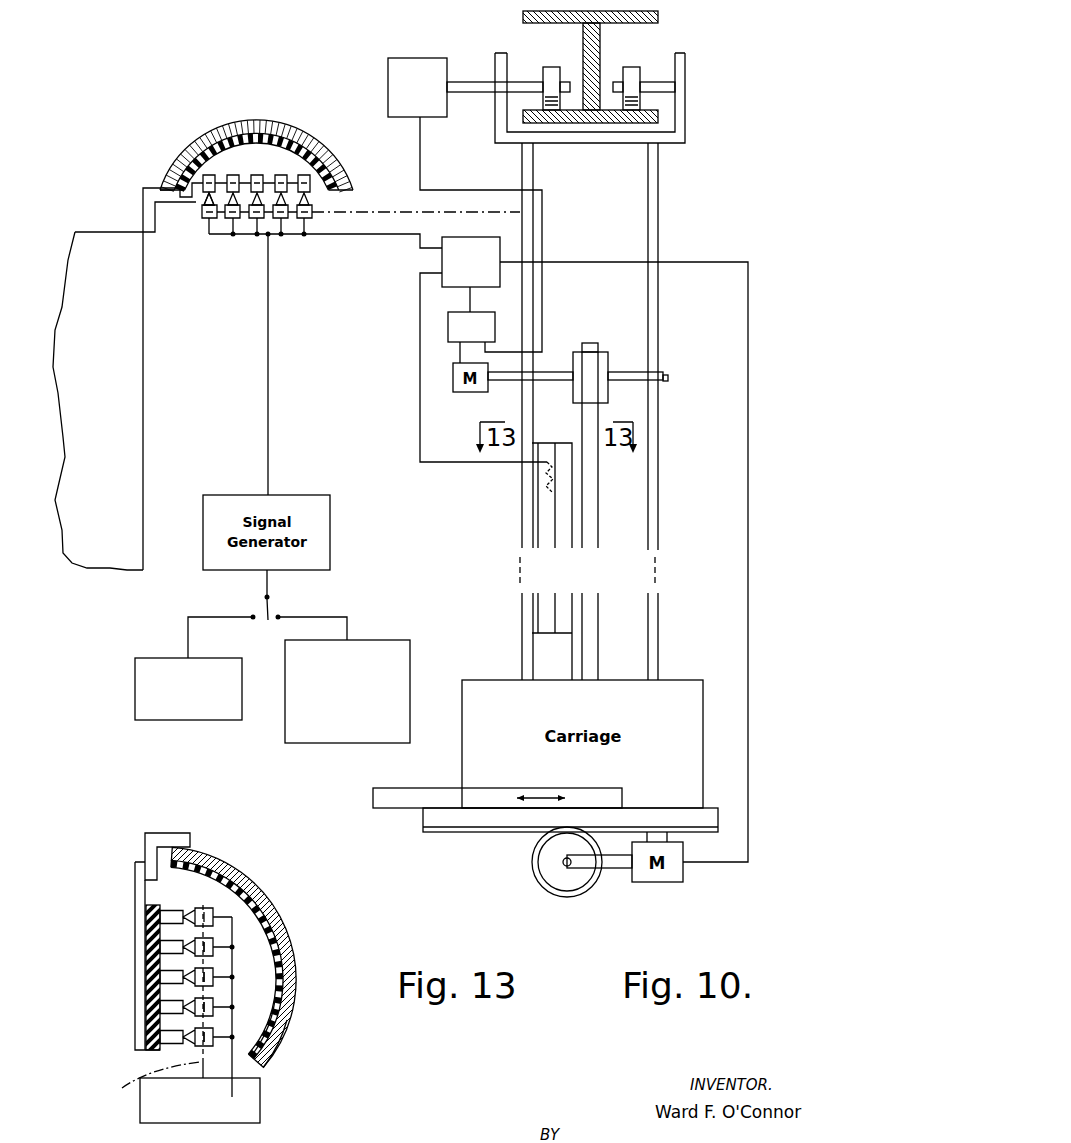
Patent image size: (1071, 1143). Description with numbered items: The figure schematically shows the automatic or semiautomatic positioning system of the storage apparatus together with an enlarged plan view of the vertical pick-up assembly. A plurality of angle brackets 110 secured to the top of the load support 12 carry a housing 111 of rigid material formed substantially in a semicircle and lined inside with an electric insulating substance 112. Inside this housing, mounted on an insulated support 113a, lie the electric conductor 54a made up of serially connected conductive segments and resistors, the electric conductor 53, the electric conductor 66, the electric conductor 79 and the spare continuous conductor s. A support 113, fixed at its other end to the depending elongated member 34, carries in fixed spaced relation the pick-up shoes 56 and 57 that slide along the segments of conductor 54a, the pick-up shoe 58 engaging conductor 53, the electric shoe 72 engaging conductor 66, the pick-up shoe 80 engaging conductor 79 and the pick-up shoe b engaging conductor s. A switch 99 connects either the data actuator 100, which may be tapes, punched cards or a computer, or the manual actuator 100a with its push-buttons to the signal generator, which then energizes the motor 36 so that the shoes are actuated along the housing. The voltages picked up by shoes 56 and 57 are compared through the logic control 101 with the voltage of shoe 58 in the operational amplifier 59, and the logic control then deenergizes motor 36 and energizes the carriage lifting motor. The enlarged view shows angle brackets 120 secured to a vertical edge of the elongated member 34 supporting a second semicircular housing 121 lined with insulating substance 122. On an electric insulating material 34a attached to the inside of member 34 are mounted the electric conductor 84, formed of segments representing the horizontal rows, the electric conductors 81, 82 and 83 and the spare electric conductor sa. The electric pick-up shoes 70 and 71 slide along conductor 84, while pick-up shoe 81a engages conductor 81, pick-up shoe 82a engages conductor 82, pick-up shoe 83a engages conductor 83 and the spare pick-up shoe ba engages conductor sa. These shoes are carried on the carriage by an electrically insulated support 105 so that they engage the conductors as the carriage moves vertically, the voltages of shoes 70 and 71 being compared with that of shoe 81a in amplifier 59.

In FIG. 10, the load support 12 is at (50, 443).
In FIG. 10, the motor 36 is at (432, 59).
In FIG. 10, the electric conductor 53 is at (233, 174).
In FIG. 10, the electric conductor 54a is at (206, 174).
In FIG. 10, the electric pick-up shoe 56 is at (202, 212).
In FIG. 10, the electric pick-up shoe 57 is at (209, 199).
In FIG. 10, the pick-up shoe 58 is at (234, 238).
In FIG. 10, the operational amplifier 59 is at (448, 326).
In FIG. 10, the electric conductor 66 is at (257, 174).
In FIG. 10, the electric shoe 72 is at (257, 228).
In FIG. 10, the electric conductor 79 is at (281, 174).
In FIG. 10, the pick-up shoe 80 is at (282, 221).
In FIG. 10, the pick-up shoe b is at (308, 221).
In FIG. 10, the spare continuous conductor s is at (300, 174).
In FIG. 10, the switch 99 is at (258, 612).
In FIG. 10, the data actuator 100 is at (165, 657).
In FIG. 10, the manual actuator 100a is at (380, 640).
In FIG. 10, the logic control 101 is at (442, 262).
In FIG. 10, the angle bracket 110 is at (143, 208).
In FIG. 10, the housing 111 is at (351, 154).
In FIG. 10, the electric insulating substance 112 is at (323, 163).
In FIG. 10, the support 113 is at (371, 208).
In FIG. 10, the support 113a is at (165, 153).
In FIG. 13, the angle bracket 120 is at (163, 833).
In FIG. 13, the elongated member 34 is at (135, 872).
In FIG. 13, the electric insulating material 34a is at (150, 1048).
In FIG. 13, the electric pick-up shoe 70 is at (205, 908).
In FIG. 13, the electric pick-up shoe 71 is at (225, 959).
In FIG. 13, the housing 121 is at (270, 899).
In FIG. 13, the electric insulating substance 122 is at (283, 968).
In FIG. 13, the electric conductor 84 is at (168, 918).
In FIG. 13, the spare electric conductor sa is at (168, 949).
In FIG. 13, the electric conductor 83 is at (168, 979).
In FIG. 13, the electric conductor 82 is at (168, 1010).
In FIG. 13, the electric conductor 81 is at (168, 1040).
In FIG. 13, the spare electric pick-up shoe ba is at (214, 944).
In FIG. 13, the electric pick-up shoe 83a is at (212, 982).
In FIG. 13, the electric pick-up shoe 82a is at (212, 1012).
In FIG. 13, the electric pick-up shoe 81a is at (213, 1043).
In FIG. 13, the electrically insulated support 105 is at (144, 1081).